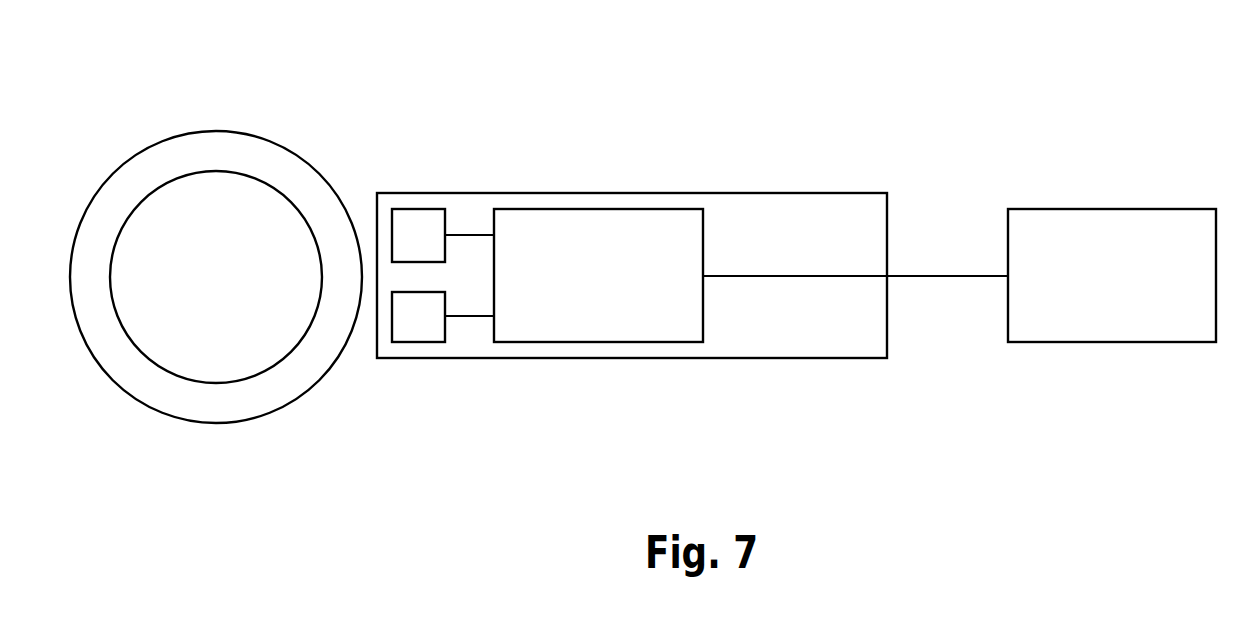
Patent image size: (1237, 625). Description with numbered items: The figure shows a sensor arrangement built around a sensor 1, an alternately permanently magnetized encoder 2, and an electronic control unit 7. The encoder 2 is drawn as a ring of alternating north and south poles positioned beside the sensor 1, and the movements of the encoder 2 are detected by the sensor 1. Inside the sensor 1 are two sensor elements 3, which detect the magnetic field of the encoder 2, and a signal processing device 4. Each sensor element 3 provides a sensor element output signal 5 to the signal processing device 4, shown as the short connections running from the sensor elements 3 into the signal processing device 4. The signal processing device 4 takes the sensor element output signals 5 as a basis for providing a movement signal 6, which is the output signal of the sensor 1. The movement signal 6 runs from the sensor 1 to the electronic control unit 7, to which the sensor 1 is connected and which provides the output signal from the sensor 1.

The sensor 1 is at (763, 192).
The encoder 2 is at (179, 102).
The sensor elements 3 is at (425, 330).
The signal processing device 4 is at (590, 290).
The sensor element output signal 5 is at (480, 390).
The movement signal 6 is at (939, 275).
The electronic control unit 7 is at (1104, 290).